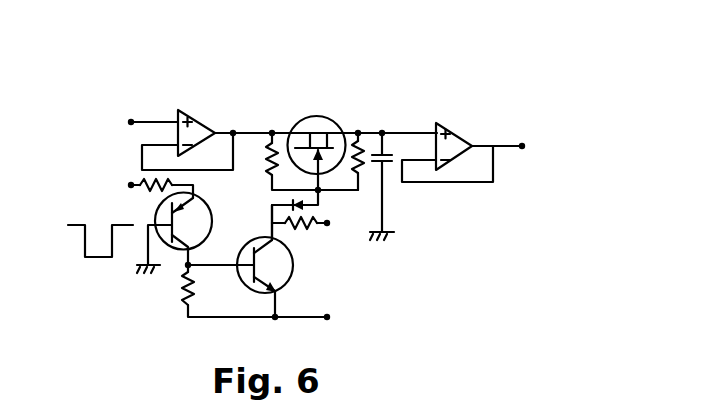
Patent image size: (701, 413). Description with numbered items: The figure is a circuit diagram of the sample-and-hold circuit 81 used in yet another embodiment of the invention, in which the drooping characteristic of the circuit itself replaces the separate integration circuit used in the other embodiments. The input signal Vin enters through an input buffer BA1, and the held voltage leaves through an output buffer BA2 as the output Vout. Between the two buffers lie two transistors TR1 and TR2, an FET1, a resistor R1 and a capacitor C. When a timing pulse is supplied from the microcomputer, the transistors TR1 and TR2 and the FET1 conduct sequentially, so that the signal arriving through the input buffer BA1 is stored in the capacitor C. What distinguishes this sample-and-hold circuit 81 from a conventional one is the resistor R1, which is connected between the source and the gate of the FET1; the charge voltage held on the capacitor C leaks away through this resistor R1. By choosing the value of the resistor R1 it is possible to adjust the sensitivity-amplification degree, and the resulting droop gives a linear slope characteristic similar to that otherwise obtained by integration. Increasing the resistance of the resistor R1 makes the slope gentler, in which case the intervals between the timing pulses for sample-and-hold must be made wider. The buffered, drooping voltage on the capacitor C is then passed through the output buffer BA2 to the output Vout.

The sample-and-hold circuit 81 is at (483, 73).
The input voltage terminal Vin is at (130, 123).
The output voltage terminal Vout is at (561, 150).
The input buffer BA1 is at (195, 118).
The output buffer BA2 is at (452, 125).
The FET FET1 is at (336, 121).
The resistor R1 is at (363, 172).
The capacitor C is at (393, 185).
The transistor TR1 is at (203, 200).
The transistor TR2 is at (288, 284).